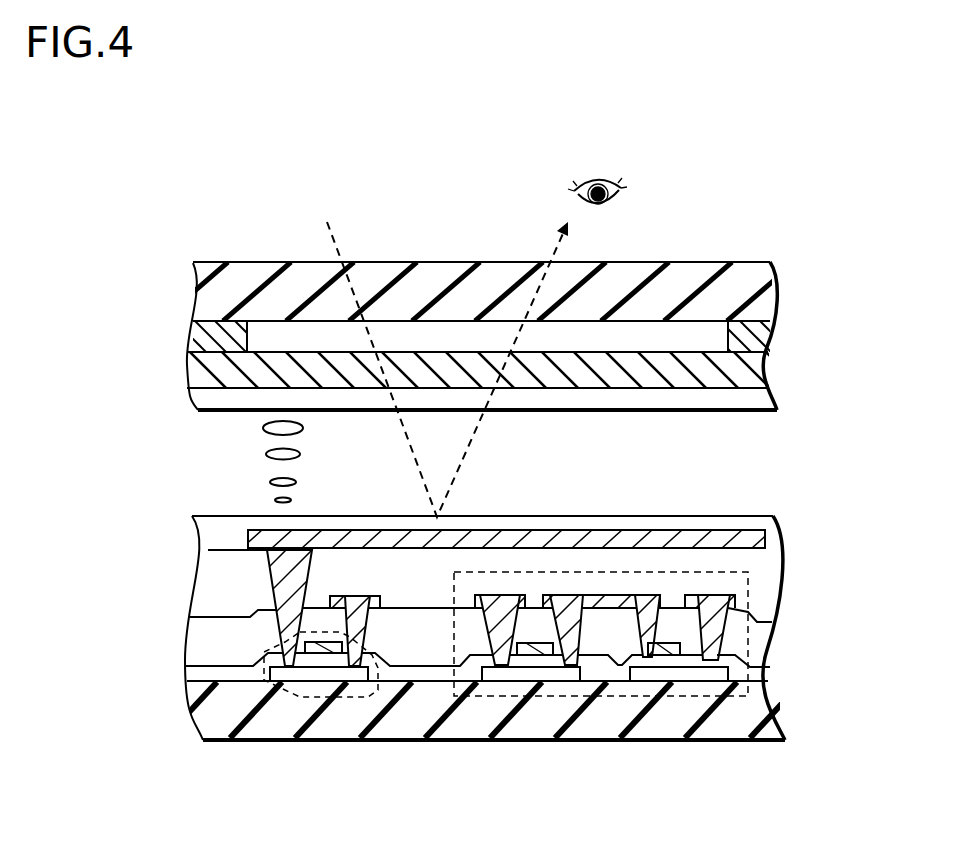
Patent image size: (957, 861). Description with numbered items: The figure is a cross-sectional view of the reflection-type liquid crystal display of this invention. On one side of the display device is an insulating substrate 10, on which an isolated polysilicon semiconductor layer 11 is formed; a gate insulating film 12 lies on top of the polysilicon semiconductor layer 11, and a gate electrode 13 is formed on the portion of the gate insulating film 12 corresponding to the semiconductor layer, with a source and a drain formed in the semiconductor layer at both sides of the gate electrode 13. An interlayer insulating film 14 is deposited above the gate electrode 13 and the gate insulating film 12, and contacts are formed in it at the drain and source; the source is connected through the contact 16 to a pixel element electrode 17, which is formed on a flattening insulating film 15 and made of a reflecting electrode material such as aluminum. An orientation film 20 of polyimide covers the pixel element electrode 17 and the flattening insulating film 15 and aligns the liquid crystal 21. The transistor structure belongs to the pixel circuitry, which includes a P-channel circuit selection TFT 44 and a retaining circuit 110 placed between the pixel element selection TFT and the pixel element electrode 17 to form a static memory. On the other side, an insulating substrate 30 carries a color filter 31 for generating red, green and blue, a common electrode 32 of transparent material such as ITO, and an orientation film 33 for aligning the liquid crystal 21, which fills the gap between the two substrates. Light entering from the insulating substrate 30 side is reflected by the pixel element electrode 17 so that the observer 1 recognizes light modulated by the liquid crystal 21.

The observer 1 is at (605, 173).
The insulating substrate 10 is at (782, 715).
The polysilicon semiconductor layer 11 is at (310, 673).
The gate insulating film 12 is at (765, 668).
The gate electrode 13 is at (323, 653).
The interlayer insulating film 14 is at (762, 632).
The flattening insulating film 15 is at (775, 560).
The contact 16 is at (270, 572).
The pixel element electrode 17 is at (712, 540).
The orientation film 20 is at (668, 525).
The liquid crystal 21 is at (230, 463).
The insulating substrate 30 is at (777, 283).
The color filter 31 is at (685, 332).
The common electrode 32 is at (768, 368).
The orientation film 33 is at (767, 400).
The P-channel circuit selection TFT 44 is at (380, 690).
The retaining circuit 110 is at (622, 698).